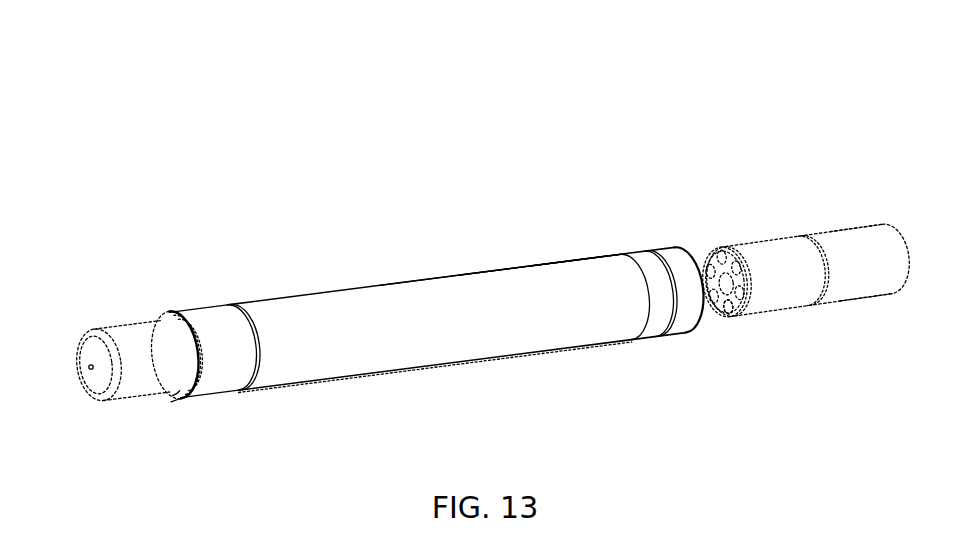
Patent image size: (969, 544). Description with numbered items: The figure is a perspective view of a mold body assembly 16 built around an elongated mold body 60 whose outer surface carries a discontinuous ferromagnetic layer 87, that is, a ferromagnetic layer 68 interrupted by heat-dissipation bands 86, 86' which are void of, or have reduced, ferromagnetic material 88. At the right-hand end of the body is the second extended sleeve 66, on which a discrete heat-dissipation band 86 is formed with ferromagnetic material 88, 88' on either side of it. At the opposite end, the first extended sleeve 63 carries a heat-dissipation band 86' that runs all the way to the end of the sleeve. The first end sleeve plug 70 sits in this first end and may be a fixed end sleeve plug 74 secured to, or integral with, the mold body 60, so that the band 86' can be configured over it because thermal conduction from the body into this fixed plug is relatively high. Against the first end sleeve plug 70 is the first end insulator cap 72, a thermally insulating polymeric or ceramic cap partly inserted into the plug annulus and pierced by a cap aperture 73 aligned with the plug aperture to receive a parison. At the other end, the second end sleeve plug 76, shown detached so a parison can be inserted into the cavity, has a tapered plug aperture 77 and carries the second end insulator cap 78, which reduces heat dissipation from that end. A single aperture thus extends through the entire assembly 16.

The mold body assembly 16 is at (290, 156).
The mold body 60 is at (370, 302).
The first extended sleeve 63 is at (197, 320).
The second extended sleeve 66 is at (680, 246).
The ferromagnetic layer 68 is at (460, 292).
The first end sleeve plug 70 is at (167, 398).
The first end insulator cap 72 is at (130, 343).
The cap aperture 73 is at (90, 367).
The fixed end sleeve plug 74 is at (190, 353).
The second end sleeve plug 76 is at (767, 250).
The plug aperture 77 is at (727, 283).
The second end insulator cap 78 is at (865, 248).
The heat-dissipation band 86 is at (651, 343).
The heat-dissipation band 86' is at (271, 382).
The discontinuous ferromagnetic layer 87 is at (527, 285).
The ferromagnetic material 88 is at (575, 212).
The ferromagnetic material 88' is at (688, 341).